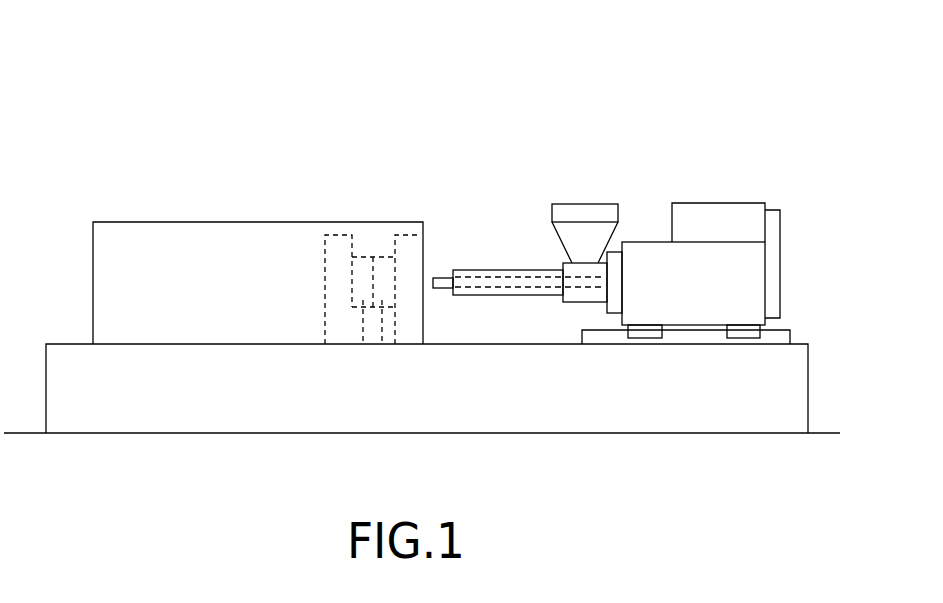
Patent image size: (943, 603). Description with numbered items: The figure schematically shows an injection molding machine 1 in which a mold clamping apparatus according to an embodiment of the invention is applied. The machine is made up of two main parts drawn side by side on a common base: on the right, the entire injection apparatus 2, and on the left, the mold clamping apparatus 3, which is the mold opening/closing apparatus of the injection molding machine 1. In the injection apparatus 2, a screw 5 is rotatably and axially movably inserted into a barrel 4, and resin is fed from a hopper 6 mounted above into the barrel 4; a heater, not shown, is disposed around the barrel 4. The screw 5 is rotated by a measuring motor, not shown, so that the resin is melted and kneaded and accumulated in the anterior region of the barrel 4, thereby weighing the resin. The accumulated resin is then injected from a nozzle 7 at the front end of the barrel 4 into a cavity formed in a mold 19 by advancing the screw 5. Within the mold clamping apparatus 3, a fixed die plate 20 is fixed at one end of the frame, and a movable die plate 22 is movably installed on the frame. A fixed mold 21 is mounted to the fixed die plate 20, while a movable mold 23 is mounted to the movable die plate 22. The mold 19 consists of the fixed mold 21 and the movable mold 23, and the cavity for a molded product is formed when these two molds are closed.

The injection molding machine 1 is at (541, 86).
The injection apparatus 2 is at (666, 188).
The mold clamping apparatus 3 is at (277, 207).
The barrel 4 is at (475, 270).
The screw 5 is at (528, 280).
The hopper 6 is at (587, 213).
The nozzle 7 is at (440, 288).
The mold 19 is at (372, 367).
The fixed die plate 20 is at (410, 247).
The fixed mold 21 is at (382, 300).
The movable die plate 22 is at (342, 243).
The movable mold 23 is at (363, 300).